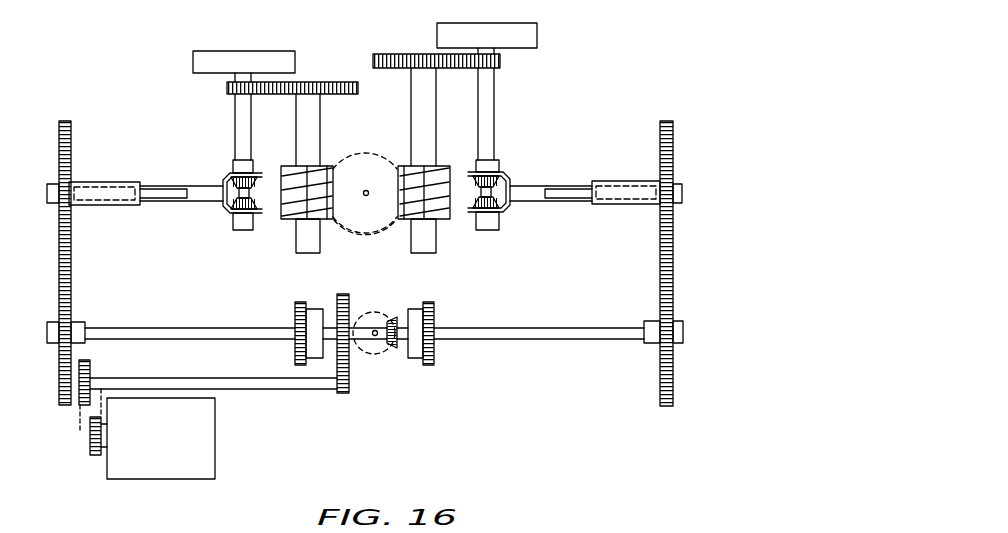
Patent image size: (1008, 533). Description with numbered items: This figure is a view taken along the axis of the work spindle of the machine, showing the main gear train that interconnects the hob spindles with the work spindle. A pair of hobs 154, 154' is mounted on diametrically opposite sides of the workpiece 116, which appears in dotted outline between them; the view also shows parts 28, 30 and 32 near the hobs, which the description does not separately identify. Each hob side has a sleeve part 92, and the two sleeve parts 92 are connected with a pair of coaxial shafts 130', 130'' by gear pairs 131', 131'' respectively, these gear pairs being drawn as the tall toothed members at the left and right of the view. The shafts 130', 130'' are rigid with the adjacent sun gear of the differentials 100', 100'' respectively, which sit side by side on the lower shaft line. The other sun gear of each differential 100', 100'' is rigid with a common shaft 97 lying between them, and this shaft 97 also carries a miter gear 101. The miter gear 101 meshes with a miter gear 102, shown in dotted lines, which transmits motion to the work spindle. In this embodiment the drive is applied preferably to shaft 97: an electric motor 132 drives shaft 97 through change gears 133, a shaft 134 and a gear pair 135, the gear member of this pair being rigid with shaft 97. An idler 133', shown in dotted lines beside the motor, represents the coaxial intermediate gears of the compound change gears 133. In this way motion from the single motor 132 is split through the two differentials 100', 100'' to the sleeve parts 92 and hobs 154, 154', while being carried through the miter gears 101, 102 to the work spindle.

The drum 28 is at (375, 264).
The drum axis 30 is at (366, 196).
The bevel gear unit 32 is at (305, 193).
The sleeve parts 92 is at (103, 182).
The common shaft 97 is at (371, 328).
The differential 100' is at (295, 317).
The differential 100'' is at (434, 317).
The miter gear 101 is at (388, 346).
The miter gear 102 is at (366, 356).
The workpiece 116 is at (385, 149).
The coaxial shaft 130' is at (217, 320).
The coaxial shaft 130'' is at (540, 318).
The gear pair 131' is at (101, 263).
The gear pair 131'' is at (635, 263).
The electric motor 132 is at (203, 448).
The change gears 133 is at (59, 396).
The idler 133' is at (63, 439).
The shaft 134 is at (178, 382).
The gear pair 135 is at (337, 383).
The hob 154 is at (324, 173).
The hob 154' is at (440, 160).